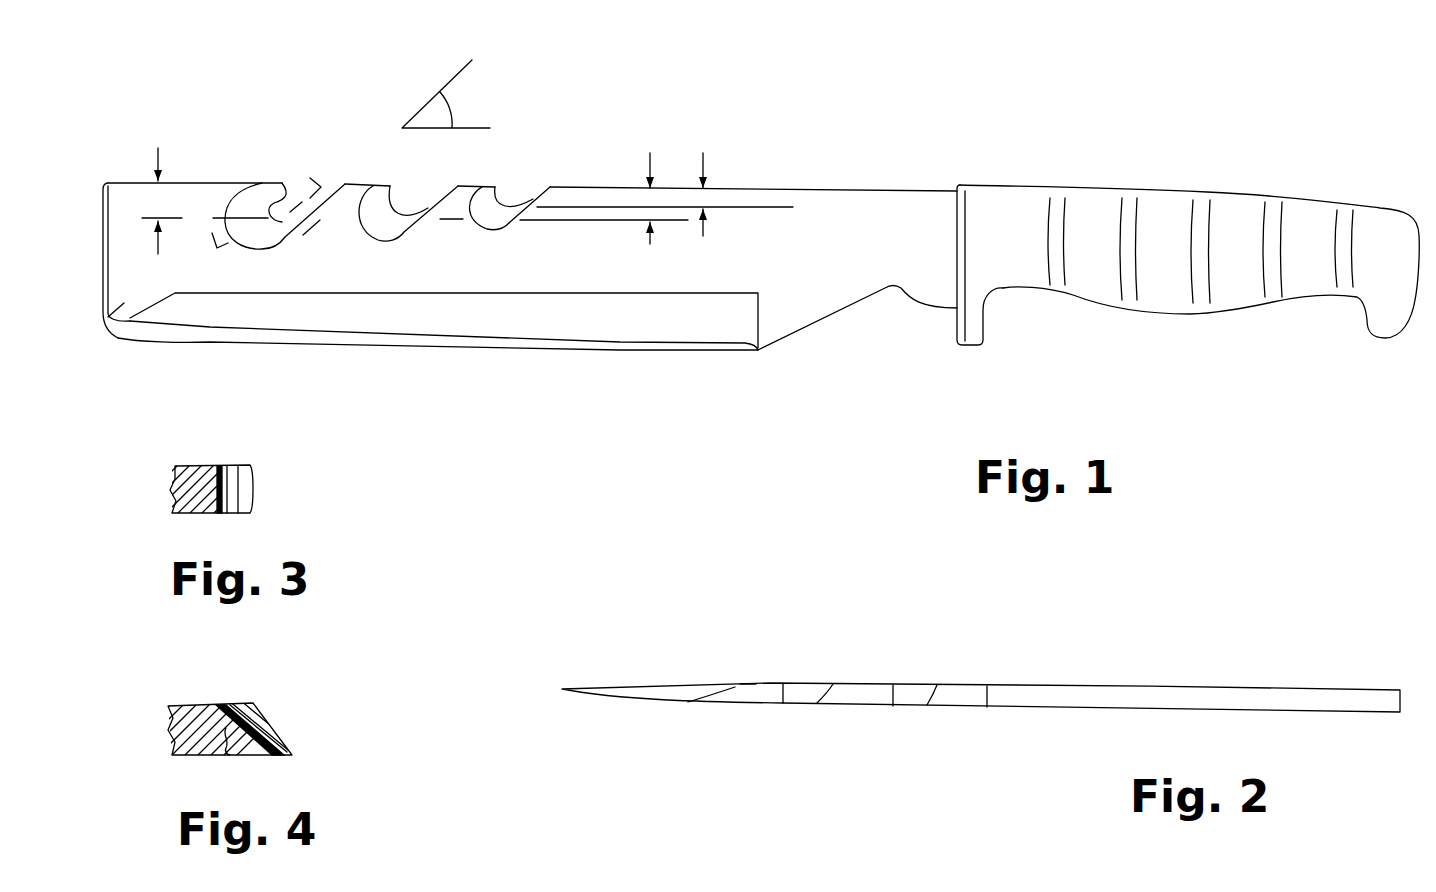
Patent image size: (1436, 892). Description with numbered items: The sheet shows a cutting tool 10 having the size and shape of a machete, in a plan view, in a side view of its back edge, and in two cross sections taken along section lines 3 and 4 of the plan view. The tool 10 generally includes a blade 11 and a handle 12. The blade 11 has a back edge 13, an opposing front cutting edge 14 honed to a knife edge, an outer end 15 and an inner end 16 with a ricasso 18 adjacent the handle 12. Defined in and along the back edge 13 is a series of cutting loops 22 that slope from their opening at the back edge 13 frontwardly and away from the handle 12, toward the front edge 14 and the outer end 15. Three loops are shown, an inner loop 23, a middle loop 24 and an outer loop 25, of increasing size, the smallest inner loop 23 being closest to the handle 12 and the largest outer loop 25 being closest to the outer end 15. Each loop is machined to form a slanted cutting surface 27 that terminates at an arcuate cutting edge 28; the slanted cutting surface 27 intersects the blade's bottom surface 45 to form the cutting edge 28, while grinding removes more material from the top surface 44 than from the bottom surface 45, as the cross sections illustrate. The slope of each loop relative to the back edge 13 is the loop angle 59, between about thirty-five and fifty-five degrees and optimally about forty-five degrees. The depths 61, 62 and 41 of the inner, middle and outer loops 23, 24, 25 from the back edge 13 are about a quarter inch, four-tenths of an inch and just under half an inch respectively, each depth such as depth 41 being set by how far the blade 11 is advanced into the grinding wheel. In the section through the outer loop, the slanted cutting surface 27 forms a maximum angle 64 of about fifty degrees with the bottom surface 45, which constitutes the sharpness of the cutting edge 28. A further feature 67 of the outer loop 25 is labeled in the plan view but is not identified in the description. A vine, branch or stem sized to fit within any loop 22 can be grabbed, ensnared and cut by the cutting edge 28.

In FIG. 1, the section line 3-- 3 is at (290, 216).
In FIG. 1, the section line 4-- 4 is at (206, 236).
In FIG. 1, the cutting tool 10 is at (1022, 76).
In FIG. 1, the blade 11 is at (787, 352).
In FIG. 3, the blade 11 is at (297, 492).
In FIG. 4, the blade 11 is at (322, 722).
In FIG. 1, the handle 12 is at (1208, 182).
In FIG. 1, the back edge 13 is at (810, 190).
In FIG. 2, the back edge 13 is at (1188, 696).
In FIG. 1, the front cutting edge 14 is at (537, 346).
In FIG. 1, the outer end 15 is at (108, 343).
In FIG. 1, the inner end 16 is at (887, 292).
In FIG. 1, the ricasso 18 is at (872, 243).
In FIG. 1, the cutting loops 22 is at (300, 88).
In FIG. 1, the inner loop 23 is at (532, 190).
In FIG. 2, the inner loop 23 is at (985, 673).
In FIG. 1, the middle loop 24 is at (432, 190).
In FIG. 2, the middle loop 24 is at (885, 672).
In FIG. 1, the outer loop 25 is at (325, 178).
In FIG. 2, the outer loop 25 is at (780, 670).
In FIG. 1, the slanted cutting surface 27 is at (250, 208).
In FIG. 3, the slanted cutting surface 27 is at (245, 492).
In FIG. 4, the slanted cutting surface 27 is at (221, 705).
In FIG. 2, the slanted cutting surface 27 is at (730, 695).
In FIG. 1, the arcuate cutting edge 28 is at (277, 183).
In FIG. 3, the arcuate cutting edge 28 is at (235, 514).
In FIG. 4, the arcuate cutting edge 28 is at (284, 758).
In FIG. 2, the arcuate cutting edge 28 is at (748, 684).
In FIG. 1, the depth of outer cutting loop 41 is at (156, 160).
In FIG. 4, the top surface 44 is at (192, 705).
In FIG. 2, the top surface 44 is at (1100, 685).
In FIG. 4, the bottom surface 45 is at (186, 758).
In FIG. 2, the bottom surface 45 is at (1097, 709).
In FIG. 1, the loop angle 59 is at (452, 107).
In FIG. 1, the depth of inner cutting loop 61 is at (665, 213).
In FIG. 1, the depth of middle cutting loop 62 is at (564, 216).
In FIG. 4, the maximum angle 64 is at (233, 755).
In FIG. 1, the curved gullet surface 67 is at (262, 177).